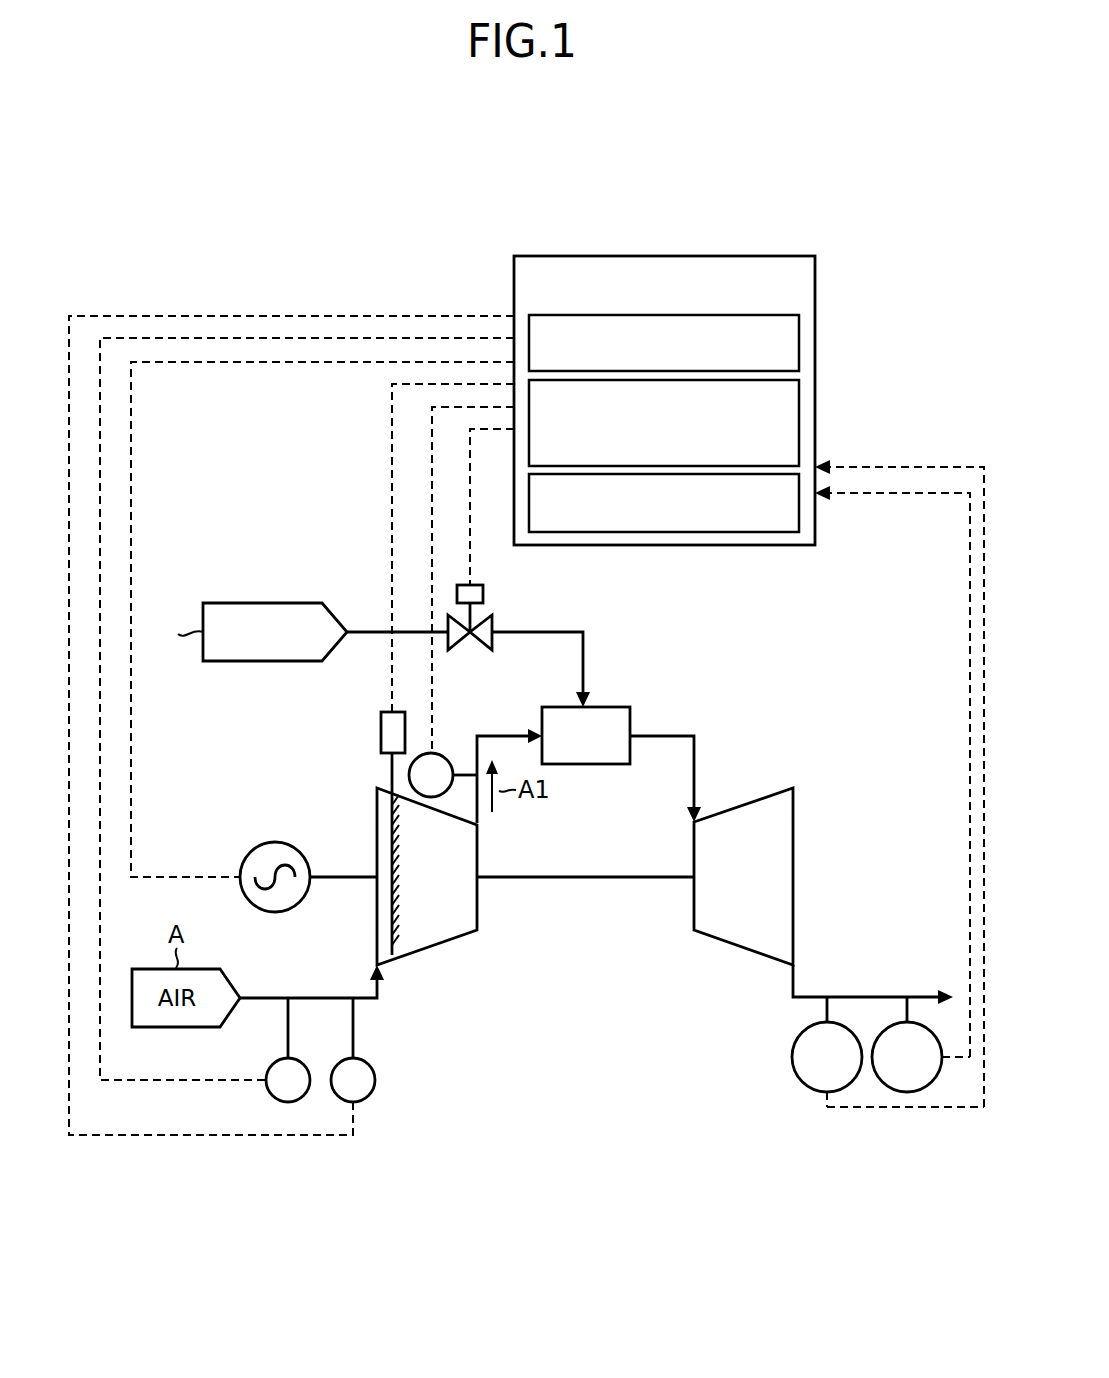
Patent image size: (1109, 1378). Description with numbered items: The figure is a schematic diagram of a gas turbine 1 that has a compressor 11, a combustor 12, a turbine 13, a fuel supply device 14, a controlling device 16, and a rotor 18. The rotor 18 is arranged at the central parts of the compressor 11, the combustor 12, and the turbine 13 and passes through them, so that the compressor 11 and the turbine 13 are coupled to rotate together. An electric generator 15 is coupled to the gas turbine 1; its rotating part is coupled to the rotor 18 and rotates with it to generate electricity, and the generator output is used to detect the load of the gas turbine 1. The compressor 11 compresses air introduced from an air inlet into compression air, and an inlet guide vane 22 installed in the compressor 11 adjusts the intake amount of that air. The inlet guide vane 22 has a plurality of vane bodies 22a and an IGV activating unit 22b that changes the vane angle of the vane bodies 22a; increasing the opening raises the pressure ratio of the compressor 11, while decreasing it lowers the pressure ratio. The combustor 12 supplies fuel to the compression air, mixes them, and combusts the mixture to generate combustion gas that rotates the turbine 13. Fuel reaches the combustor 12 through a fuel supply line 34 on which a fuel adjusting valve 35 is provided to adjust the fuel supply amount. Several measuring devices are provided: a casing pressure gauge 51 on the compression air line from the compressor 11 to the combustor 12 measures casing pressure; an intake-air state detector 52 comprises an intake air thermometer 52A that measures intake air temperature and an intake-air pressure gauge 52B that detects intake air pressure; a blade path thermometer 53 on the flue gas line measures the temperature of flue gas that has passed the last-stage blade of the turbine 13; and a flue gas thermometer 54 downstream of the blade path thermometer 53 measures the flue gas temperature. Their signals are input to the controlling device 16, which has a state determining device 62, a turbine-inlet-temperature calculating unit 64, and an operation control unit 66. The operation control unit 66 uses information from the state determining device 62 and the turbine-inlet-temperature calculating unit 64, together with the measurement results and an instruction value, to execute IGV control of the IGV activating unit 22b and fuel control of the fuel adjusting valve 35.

The gas turbine 1 is at (647, 170).
The compressor 11 is at (428, 950).
The combustor 12 is at (610, 707).
The turbine 13 is at (748, 952).
The fuel supply device 14 is at (283, 558).
The electric generator 15 is at (277, 842).
The controlling device 16 is at (692, 257).
The rotor 18 is at (584, 878).
The inlet guide vane 22 is at (363, 765).
The vane bodies 22a is at (396, 868).
The IGV activating unit 22b is at (381, 735).
The fuel supply line 34 is at (364, 631).
The fuel adjusting valve 35 is at (492, 618).
The casing pressure gauge 51 is at (446, 755).
The intake-air state detector 52 is at (341, 1115).
The intake air thermometer 52A is at (297, 1102).
The intake-air pressure gauge 52B is at (363, 1102).
The blade path thermometer 53 is at (839, 1093).
The flue gas thermometer 54 is at (919, 1093).
The state determining device 62 is at (799, 347).
The turbine-inlet-temperature calculating unit 64 is at (799, 424).
The operation control unit 66 is at (799, 517).